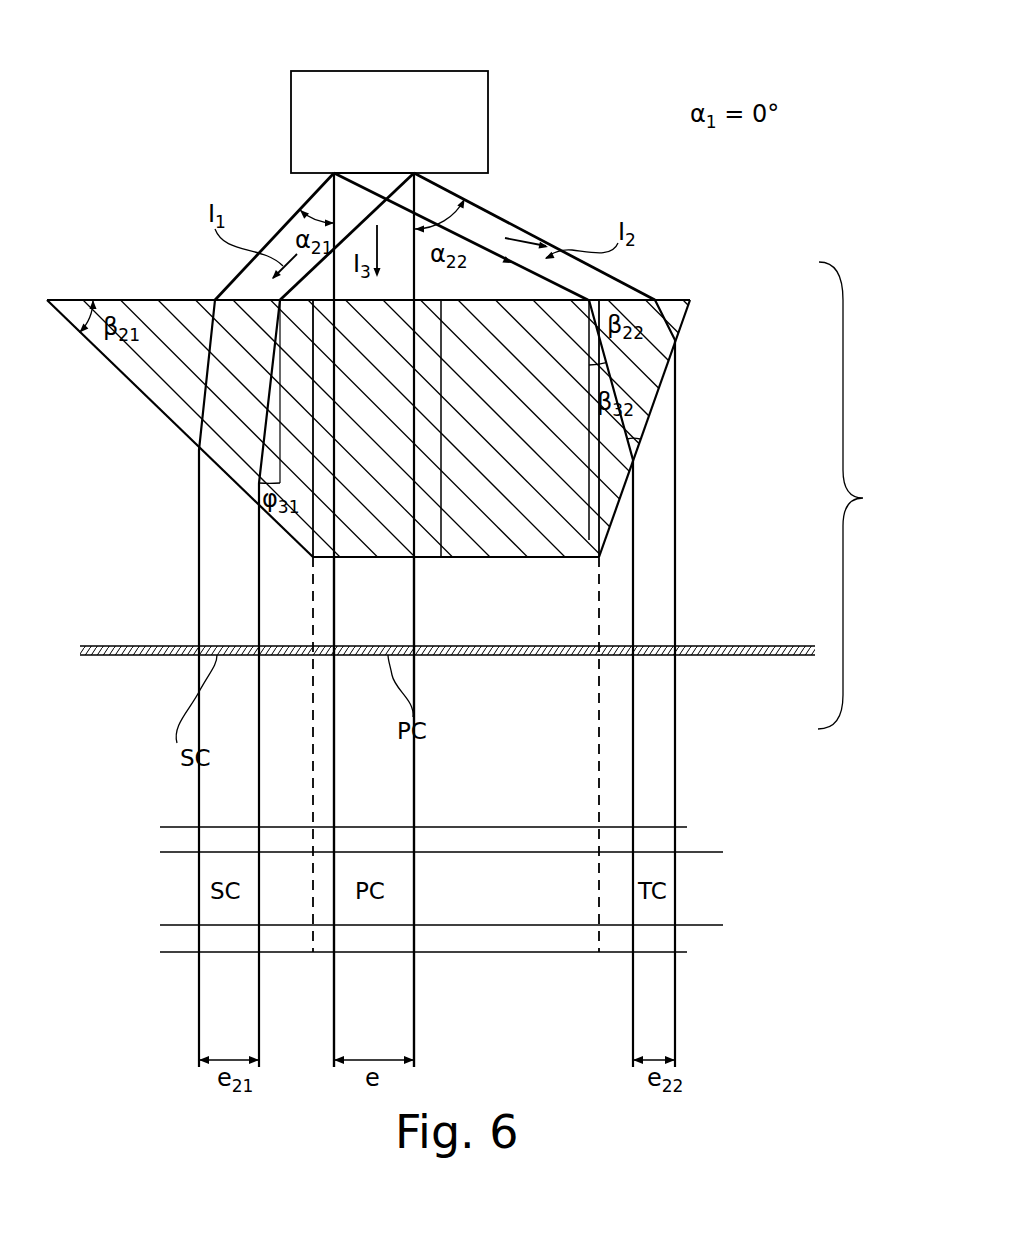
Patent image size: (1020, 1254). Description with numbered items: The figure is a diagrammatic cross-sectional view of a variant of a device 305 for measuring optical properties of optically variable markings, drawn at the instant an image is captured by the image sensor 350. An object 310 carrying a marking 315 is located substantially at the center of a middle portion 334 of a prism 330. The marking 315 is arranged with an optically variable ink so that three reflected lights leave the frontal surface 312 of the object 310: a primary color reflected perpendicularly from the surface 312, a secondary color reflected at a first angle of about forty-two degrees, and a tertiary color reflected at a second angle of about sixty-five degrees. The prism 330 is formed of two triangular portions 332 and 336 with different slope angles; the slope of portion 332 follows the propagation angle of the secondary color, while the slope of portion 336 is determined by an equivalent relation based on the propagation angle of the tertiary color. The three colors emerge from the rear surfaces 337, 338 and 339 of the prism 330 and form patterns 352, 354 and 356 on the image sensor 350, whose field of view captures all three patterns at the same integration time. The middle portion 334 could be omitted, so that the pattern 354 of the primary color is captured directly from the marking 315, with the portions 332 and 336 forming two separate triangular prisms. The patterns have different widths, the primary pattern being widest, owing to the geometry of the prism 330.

The device for measuring optical properties of optically variable markings 305 is at (866, 495).
The object 310 is at (470, 130).
The frontal surface of object 312 is at (455, 178).
The marking 315 is at (360, 173).
The prism 330 is at (433, 495).
The triangular portion 332 is at (253, 312).
The middle portion of prism 334 is at (363, 462).
The triangular portion 336 is at (543, 477).
The rear surface of prism 337 is at (197, 350).
The rear surface of prism 338 is at (430, 560).
The rear surface of prism 339 is at (617, 375).
The image sensor 350 is at (782, 657).
The pattern 352 is at (237, 655).
The pattern 354 is at (365, 655).
The pattern 356 is at (652, 657).